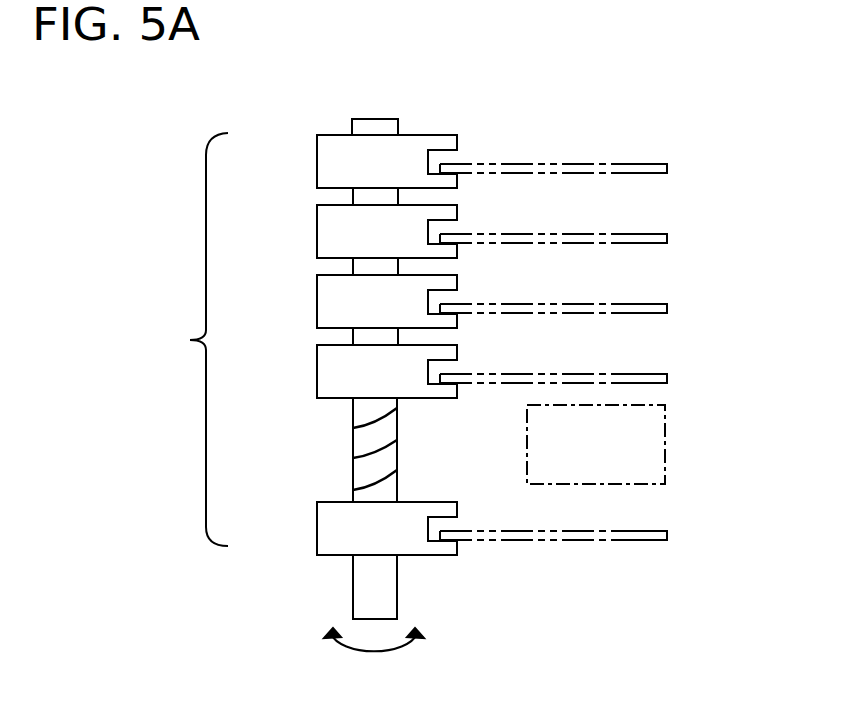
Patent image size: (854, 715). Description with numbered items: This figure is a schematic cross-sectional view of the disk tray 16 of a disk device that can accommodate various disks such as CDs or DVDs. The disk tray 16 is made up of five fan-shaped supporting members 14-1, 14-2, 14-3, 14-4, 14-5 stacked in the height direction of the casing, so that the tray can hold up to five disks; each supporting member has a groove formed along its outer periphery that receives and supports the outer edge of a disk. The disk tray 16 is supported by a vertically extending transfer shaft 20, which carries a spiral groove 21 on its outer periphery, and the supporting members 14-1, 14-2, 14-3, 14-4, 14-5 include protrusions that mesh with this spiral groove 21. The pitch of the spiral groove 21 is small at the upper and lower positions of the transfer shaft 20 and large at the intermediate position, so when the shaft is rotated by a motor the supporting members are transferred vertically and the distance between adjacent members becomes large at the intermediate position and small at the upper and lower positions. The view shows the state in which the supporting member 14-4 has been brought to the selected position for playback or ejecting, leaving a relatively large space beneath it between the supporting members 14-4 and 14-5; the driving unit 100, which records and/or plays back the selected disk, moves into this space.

The supporting member 14-1 is at (317, 165).
The supporting member 14-2 is at (317, 235).
The supporting member 14-3 is at (317, 305).
The supporting member 14-4 is at (317, 375).
The supporting member 14-5 is at (317, 530).
The disk tray 16 is at (191, 339).
The transfer shaft 20 is at (372, 119).
The spiral groove 21 is at (353, 424).
The driving unit 100 is at (632, 442).